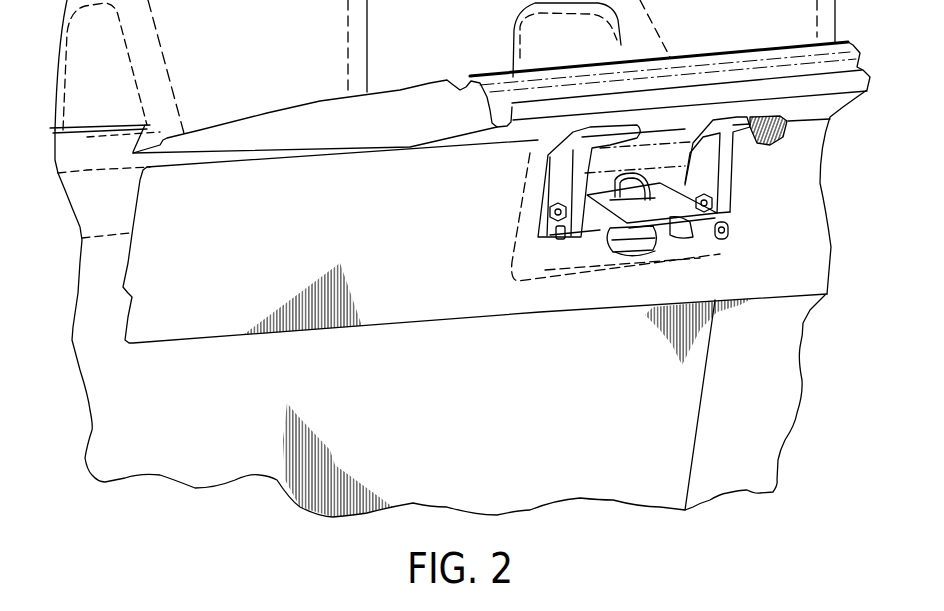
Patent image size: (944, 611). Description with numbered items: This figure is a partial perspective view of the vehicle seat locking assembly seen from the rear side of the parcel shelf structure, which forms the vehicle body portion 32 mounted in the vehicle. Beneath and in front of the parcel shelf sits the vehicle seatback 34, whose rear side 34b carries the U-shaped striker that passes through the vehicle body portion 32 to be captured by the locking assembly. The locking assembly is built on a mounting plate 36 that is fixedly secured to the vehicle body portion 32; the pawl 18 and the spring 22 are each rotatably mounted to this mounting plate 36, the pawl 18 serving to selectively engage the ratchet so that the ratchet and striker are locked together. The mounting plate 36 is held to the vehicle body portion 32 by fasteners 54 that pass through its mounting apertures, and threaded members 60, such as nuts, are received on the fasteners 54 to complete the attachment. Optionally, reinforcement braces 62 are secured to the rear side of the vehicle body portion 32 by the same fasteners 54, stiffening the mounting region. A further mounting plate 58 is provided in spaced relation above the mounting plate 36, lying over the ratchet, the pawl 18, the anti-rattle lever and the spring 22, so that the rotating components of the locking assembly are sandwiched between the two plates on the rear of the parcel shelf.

The pawl 18 is at (603, 233).
The spring 22 is at (713, 230).
The vehicle body portion 32 is at (222, 365).
The vehicle seatback 34 is at (555, 478).
The rear side of the vehicle seatback 34b is at (442, 409).
The mounting plate 36 is at (675, 237).
The fasteners 54 is at (560, 234).
The further mounting plate 58 is at (667, 197).
The threaded members 60 is at (549, 211).
The reinforcement braces 62 is at (563, 165).